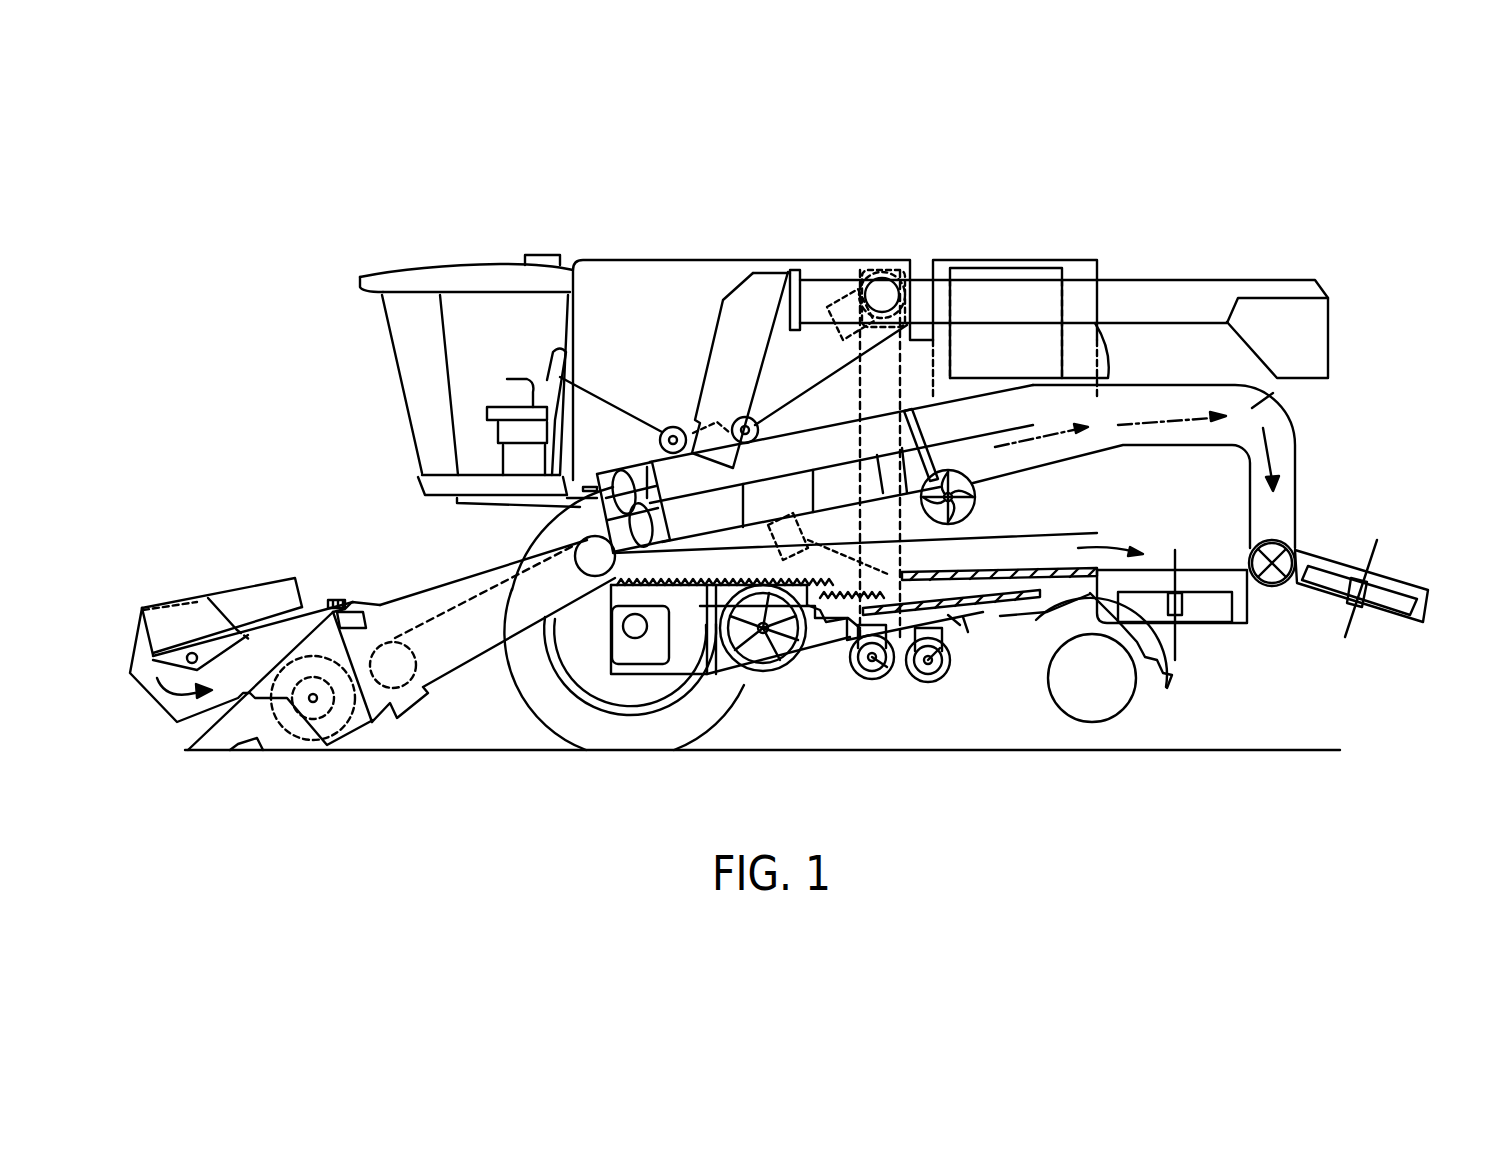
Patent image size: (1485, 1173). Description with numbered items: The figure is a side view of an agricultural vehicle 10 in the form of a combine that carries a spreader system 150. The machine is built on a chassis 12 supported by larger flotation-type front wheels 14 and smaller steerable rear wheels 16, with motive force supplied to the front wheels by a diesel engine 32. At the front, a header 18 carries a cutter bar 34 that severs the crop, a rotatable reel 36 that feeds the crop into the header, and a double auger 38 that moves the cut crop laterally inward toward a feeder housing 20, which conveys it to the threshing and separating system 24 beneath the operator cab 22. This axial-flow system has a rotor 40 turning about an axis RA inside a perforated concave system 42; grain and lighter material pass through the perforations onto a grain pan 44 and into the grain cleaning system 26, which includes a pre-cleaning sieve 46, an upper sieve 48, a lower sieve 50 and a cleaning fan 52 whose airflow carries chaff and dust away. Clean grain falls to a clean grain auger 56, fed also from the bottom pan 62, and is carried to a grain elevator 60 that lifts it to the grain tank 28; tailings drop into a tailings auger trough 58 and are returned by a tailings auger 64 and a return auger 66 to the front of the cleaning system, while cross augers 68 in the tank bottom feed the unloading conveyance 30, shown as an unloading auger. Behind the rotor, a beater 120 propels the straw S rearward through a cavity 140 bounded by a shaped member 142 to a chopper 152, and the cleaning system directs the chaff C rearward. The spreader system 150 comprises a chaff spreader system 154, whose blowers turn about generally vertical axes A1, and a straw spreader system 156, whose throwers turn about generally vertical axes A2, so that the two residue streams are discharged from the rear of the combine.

The agricultural vehicle 10 is at (463, 262).
The chassis 12 is at (966, 634).
The front wheels 14 is at (538, 708).
The rear wheels 16 is at (1147, 720).
The header 18 is at (236, 583).
The feeder housing 20 is at (433, 582).
The operator cab 22 is at (398, 362).
The threshing and separating system 24 is at (548, 518).
The grain cleaning system 26 is at (830, 688).
The grain tank 28 is at (614, 272).
The unloading conveyance 30 is at (1180, 292).
The diesel engine 32 is at (992, 270).
The cutter bar 34 is at (250, 740).
The rotatable reel 36 is at (150, 648).
The double auger 38 is at (313, 715).
The rotor 40 is at (618, 480).
The perforated concave system 42 is at (808, 458).
The grain pan 44 is at (612, 604).
The pre-cleaning sieve 46 is at (918, 572).
The upper sieve 48 is at (1010, 572).
The lower sieve 50 is at (950, 622).
The cleaning fan 52 is at (768, 645).
The clean grain auger 56 is at (877, 680).
The tailings auger trough 58 is at (1030, 605).
The grain elevator 60 is at (925, 380).
The bottom pan 62 is at (1003, 590).
The tailings auger 64 is at (930, 682).
The return auger 66 is at (829, 539).
The cross augers 68 is at (668, 428).
The beater 120 is at (975, 507).
The cavity 140 is at (1252, 408).
The shaped member 142 is at (1288, 412).
The spreader system 150 is at (1378, 492).
The chopper 152 is at (1273, 547).
The chaff spreader system 154 is at (1188, 660).
The straw spreader system 156 is at (1345, 652).
The straw S is at (1158, 405).
The rotor axis RA is at (1030, 445).
The chaff C is at (1097, 538).
The blower axes A1 is at (1178, 634).
The thrower axes A2 is at (1372, 542).